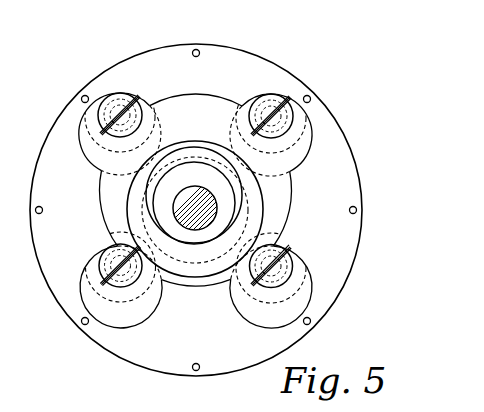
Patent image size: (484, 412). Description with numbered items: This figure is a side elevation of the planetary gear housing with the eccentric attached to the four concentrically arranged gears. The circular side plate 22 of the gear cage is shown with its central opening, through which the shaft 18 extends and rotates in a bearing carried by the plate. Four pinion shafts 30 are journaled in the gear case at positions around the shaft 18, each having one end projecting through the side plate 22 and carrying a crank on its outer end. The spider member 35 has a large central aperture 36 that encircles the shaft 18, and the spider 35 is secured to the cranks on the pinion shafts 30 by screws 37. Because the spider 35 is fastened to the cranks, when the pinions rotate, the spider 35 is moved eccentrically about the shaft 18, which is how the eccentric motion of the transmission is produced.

The side plate 22 is at (348, 166).
The spider member 35 is at (217, 103).
The screws 37 is at (140, 114).
The pinion shafts 30 is at (103, 138).
The central aperture 36 is at (274, 219).
The shaft 18 is at (198, 224).